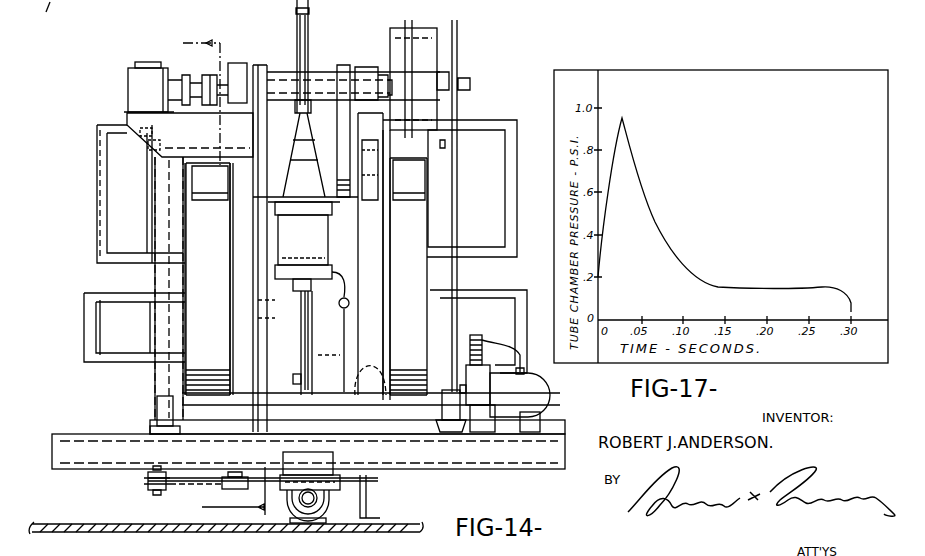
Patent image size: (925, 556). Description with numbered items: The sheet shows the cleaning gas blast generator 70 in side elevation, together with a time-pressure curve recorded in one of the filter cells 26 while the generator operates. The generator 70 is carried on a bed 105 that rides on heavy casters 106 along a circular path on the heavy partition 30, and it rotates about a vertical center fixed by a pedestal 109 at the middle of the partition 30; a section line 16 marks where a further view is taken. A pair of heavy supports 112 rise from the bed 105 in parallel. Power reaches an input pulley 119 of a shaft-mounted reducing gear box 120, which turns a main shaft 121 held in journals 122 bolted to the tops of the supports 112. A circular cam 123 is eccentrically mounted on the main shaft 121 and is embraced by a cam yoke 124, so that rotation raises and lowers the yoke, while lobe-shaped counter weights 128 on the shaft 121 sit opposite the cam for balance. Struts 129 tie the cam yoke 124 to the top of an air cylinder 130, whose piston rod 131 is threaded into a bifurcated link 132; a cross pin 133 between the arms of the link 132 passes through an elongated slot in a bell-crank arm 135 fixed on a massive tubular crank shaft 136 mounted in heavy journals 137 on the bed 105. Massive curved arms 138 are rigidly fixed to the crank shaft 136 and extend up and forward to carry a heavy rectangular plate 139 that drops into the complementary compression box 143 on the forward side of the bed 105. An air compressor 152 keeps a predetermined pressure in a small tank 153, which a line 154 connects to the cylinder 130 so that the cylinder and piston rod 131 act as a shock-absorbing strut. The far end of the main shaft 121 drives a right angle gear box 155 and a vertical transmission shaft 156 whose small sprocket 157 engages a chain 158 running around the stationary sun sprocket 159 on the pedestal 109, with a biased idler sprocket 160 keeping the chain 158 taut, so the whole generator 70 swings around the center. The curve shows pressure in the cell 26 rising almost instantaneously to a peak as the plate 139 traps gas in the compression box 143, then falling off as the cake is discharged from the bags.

The section line 16— 16 is at (224, 270).
The filter cell 26 is at (28, 14).
The partition 30 is at (82, 521).
The cleaning gas blast generator 70 is at (87, 188).
The bed 105 is at (70, 434).
The casters 106 is at (322, 512).
The pedestal 109 is at (368, 500).
The supports 112 is at (232, 243).
The input pulley 119 is at (458, 42).
The reducing gear box 120 is at (424, 30).
The main shaft 121 is at (252, 62).
The journals 122 is at (246, 62).
The circular cam 123 is at (308, 37).
The cam yoke 124 is at (315, 16).
The counter weights 128 is at (334, 153).
The struts 129 is at (305, 192).
The air cylinder 130 is at (308, 241).
The piston rod 131 is at (300, 296).
The bifurcated link 132 is at (300, 338).
The cross pin 133 is at (295, 383).
The bell-crank arm 135 is at (308, 398).
The tubular crank shaft 136 is at (156, 402).
The journals 137 is at (149, 410).
The curved arms 138 is at (216, 285).
The rectangular plate 139 is at (107, 121).
The compression box 143 is at (79, 328).
The air compressor 152 is at (490, 392).
The air tank 153 is at (540, 412).
The line 154 is at (342, 332).
The right angle gear box 155 is at (128, 77).
The vertical transmission shaft 156 is at (152, 279).
The sprocket 157 is at (144, 486).
The chain 158 is at (184, 486).
The sun sprocket 159 is at (380, 480).
The idler sprocket 160 is at (177, 504).